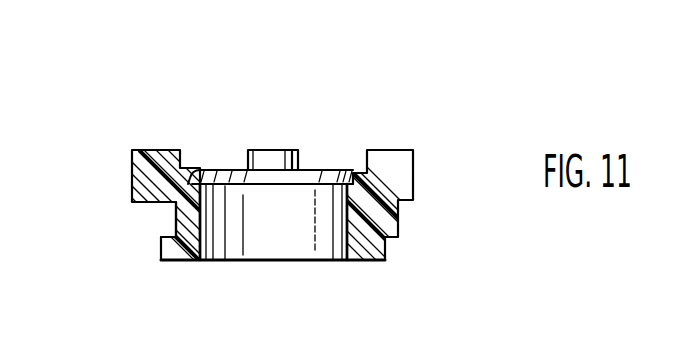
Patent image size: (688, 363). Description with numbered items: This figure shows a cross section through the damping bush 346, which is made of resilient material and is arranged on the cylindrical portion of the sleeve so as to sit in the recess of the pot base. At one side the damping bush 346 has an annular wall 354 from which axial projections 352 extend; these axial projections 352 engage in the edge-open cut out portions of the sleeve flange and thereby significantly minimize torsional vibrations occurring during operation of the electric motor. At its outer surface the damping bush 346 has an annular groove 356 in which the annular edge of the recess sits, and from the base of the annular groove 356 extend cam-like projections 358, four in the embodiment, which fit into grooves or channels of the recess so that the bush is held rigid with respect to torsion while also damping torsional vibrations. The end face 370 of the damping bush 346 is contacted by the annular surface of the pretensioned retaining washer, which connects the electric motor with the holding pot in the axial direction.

The damping bush 346 is at (269, 224).
The axial projections 352 is at (146, 152).
The annular wall 354 is at (137, 192).
The annular groove 356 is at (169, 212).
The cam-like projections 358 is at (391, 227).
The end face 370 is at (285, 261).